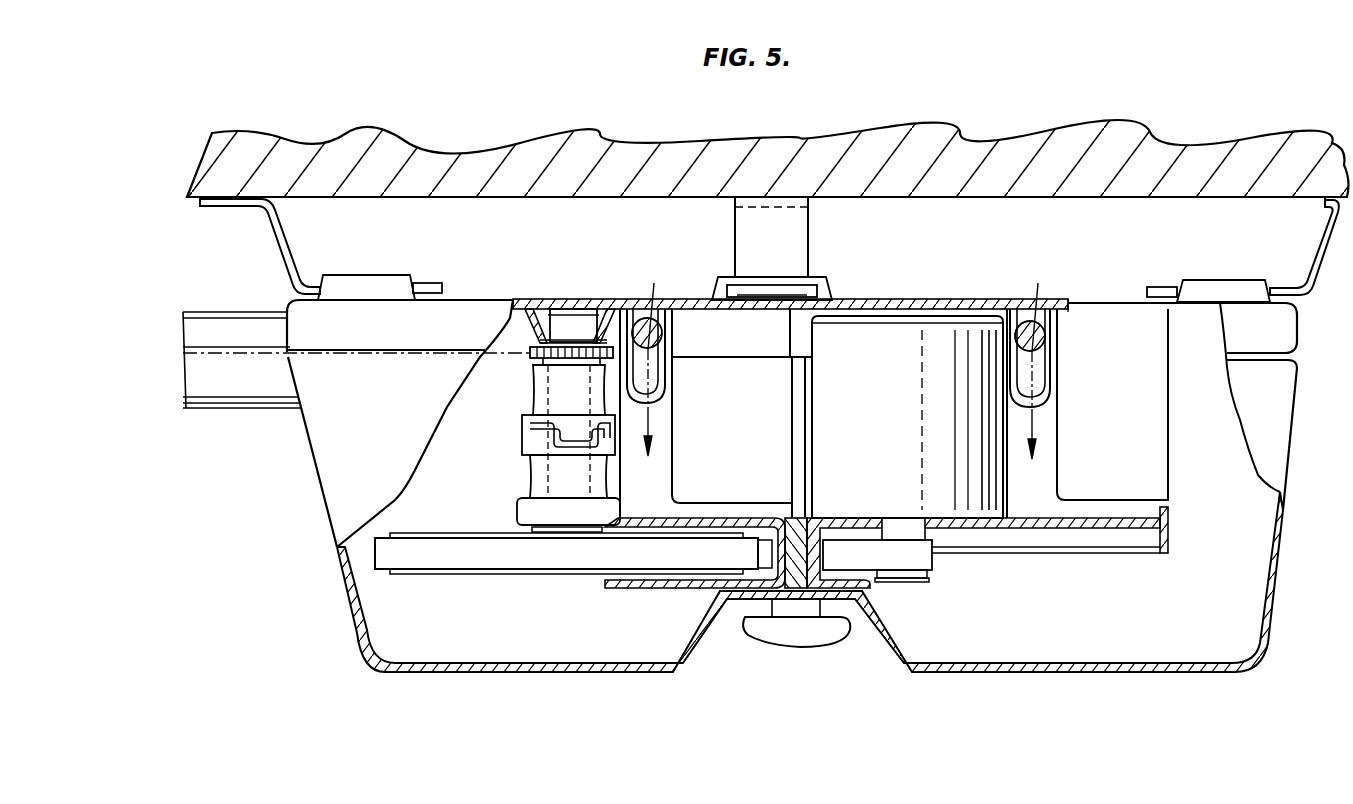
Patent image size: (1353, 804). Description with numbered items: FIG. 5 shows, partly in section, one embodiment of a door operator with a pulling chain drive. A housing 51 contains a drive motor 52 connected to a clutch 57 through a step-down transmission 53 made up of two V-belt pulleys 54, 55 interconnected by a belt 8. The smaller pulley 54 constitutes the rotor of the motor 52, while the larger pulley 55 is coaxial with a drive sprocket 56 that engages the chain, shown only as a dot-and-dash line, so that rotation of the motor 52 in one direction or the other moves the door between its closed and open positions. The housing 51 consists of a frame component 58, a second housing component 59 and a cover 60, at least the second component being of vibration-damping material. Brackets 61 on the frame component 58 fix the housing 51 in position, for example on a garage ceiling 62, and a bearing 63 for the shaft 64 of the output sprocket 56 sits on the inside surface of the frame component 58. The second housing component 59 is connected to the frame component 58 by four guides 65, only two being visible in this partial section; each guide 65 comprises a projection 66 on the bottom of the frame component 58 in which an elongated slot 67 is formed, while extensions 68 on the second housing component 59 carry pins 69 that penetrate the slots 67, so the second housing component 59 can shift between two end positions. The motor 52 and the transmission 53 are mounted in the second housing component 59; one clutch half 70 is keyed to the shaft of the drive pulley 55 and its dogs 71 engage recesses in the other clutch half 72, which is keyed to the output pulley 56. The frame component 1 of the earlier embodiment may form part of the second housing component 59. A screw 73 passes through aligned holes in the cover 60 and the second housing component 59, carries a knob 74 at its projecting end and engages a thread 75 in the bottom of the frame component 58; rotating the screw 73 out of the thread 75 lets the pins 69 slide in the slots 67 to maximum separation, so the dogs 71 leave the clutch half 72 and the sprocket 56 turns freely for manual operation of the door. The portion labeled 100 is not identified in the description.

The frame component 1 is at (1290, 331).
The belt 8 is at (435, 548).
The housing 51 is at (1048, 688).
The drive motor 52 is at (876, 452).
The step-down transmission 53 is at (652, 604).
The smaller V-belt pulley 54 is at (925, 582).
The larger V-belt pulley 55 is at (467, 575).
The drive sprocket 56 is at (540, 339).
The clutch 57 is at (533, 448).
The frame component 58 is at (948, 300).
The second housing component 59 is at (965, 520).
The cover 60 is at (961, 672).
The brackets 61 is at (276, 243).
The garage ceiling 62 is at (411, 180).
The bearing 63 is at (607, 302).
The shaft 64 is at (563, 316).
The guide 65 is at (699, 370).
The projection 66 is at (668, 375).
The elongated slot 67 is at (654, 372).
The extensions 68 is at (1048, 444).
The pins 69 is at (854, 357).
The clutch half 70 is at (540, 483).
The dogs 71 is at (542, 445).
The clutch half 72 is at (543, 395).
The screw 73 is at (792, 446).
The knob 74 is at (838, 634).
The thread 75 is at (792, 322).
The housing section 100 is at (1288, 400).